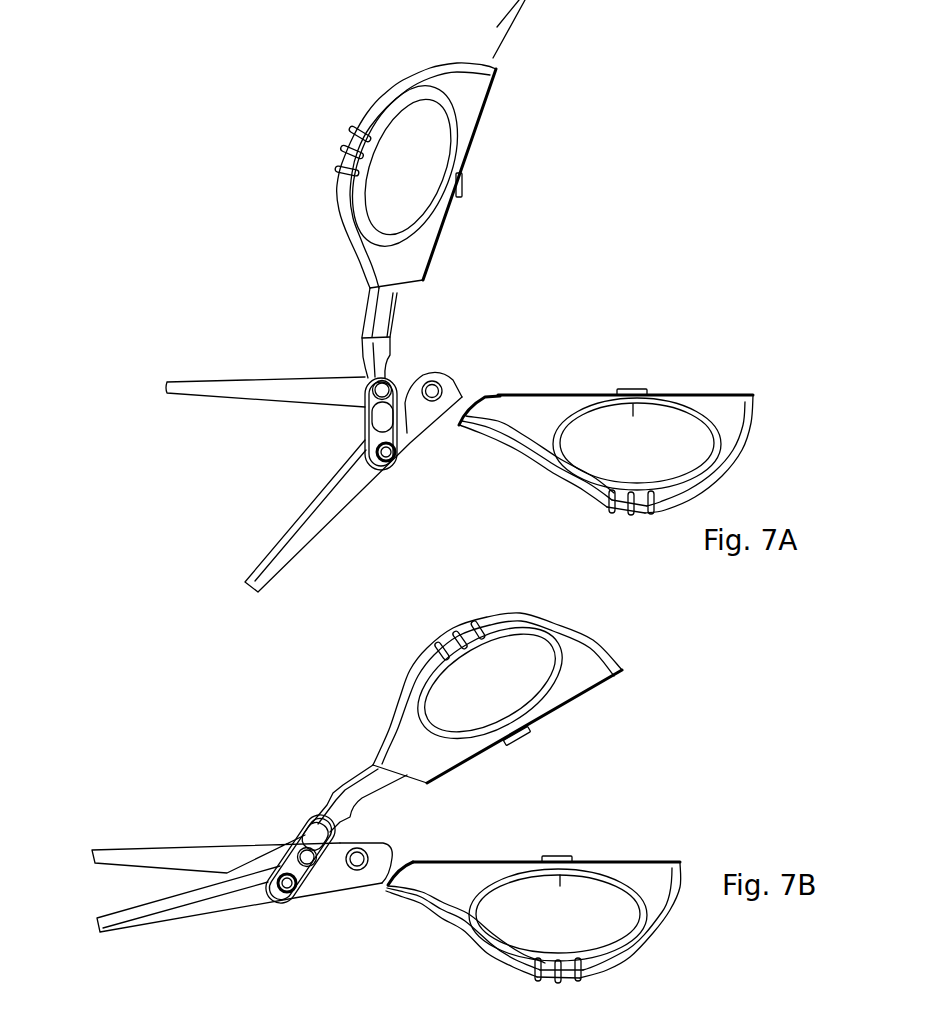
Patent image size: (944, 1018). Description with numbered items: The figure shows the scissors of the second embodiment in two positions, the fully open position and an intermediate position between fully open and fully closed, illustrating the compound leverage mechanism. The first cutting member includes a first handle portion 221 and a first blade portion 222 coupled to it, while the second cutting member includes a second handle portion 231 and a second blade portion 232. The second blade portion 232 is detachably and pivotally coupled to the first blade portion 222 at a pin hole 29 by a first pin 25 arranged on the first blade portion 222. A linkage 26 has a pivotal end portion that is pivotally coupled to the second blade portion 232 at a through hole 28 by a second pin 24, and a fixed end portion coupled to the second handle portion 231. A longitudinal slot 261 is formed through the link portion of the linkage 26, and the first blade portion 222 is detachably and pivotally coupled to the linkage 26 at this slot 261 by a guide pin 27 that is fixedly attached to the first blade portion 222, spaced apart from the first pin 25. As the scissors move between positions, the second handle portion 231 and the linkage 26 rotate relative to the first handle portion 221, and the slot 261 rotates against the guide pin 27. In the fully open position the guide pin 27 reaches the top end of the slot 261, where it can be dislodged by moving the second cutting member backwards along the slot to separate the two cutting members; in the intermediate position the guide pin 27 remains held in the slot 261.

In FIG. 7A, the second handle portion 231 is at (382, 113).
In FIG. 7B, the second handle portion 231 is at (590, 667).
In FIG. 7A, the first handle portion 221 is at (563, 410).
In FIG. 7B, the first handle portion 221 is at (667, 908).
In FIG. 7A, the first blade portion 222 is at (237, 390).
In FIG. 7B, the first blade portion 222 is at (203, 853).
In FIG. 7A, the second blade portion 232 is at (323, 528).
In FIG. 7B, the second blade portion 232 is at (210, 900).
In FIG. 7A, the linkage 26 is at (373, 353).
In FIG. 7B, the linkage 26 is at (343, 797).
In FIG. 7A, the longitudinal slot 261 is at (397, 425).
In FIG. 7A, the first pin 25 is at (437, 382).
In FIG. 7B, the first pin 25 is at (343, 798).
In FIG. 7A, the guide pin 27 is at (386, 388).
In FIG. 7B, the guide pin 27 is at (309, 862).
In FIG. 7A, the through hole 28 is at (377, 450).
In FIG. 7B, the through hole 28 is at (313, 837).
In FIG. 7A, the second pin 24 is at (388, 462).
In FIG. 7B, the second pin 24 is at (286, 889).
In FIG. 7A, the pin hole 29 is at (445, 388).
In FIG. 7B, the pin hole 29 is at (368, 869).